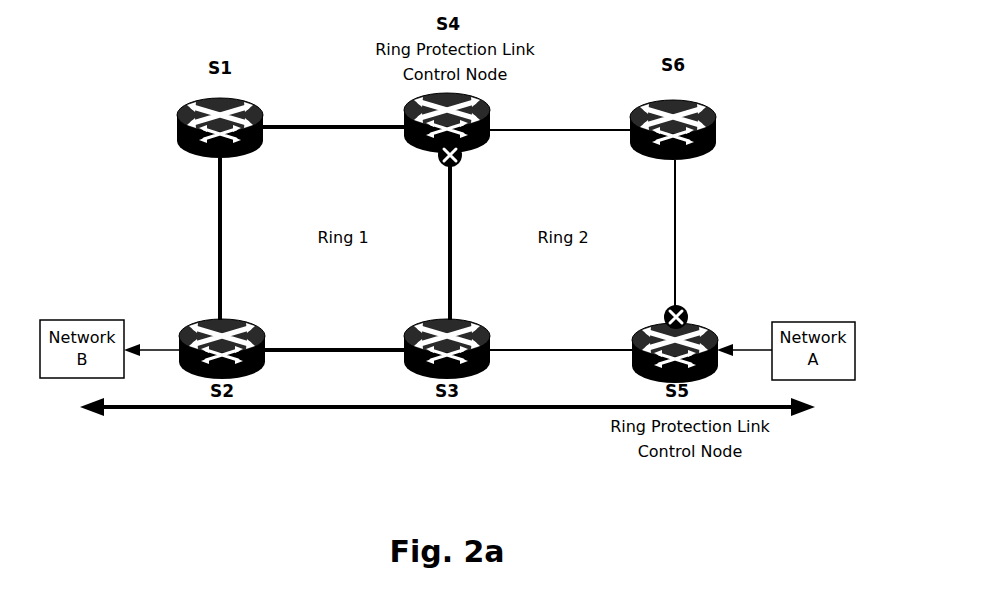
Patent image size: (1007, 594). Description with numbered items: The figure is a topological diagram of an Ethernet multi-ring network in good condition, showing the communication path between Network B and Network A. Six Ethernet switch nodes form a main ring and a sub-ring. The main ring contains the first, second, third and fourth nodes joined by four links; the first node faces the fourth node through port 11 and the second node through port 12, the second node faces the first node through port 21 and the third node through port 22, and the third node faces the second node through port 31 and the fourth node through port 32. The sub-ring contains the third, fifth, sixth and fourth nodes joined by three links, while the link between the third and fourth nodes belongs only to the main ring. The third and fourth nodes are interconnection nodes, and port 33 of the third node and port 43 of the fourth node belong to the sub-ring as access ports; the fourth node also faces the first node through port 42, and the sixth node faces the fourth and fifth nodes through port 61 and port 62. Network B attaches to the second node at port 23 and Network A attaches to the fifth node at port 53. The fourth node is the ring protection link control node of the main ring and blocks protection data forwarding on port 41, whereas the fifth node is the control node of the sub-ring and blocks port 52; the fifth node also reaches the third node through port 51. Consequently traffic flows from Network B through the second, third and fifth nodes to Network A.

The port 11 is at (299, 111).
The port 12 is at (202, 199).
The port 21 is at (201, 280).
The port 22 is at (300, 365).
The port 23 is at (152, 362).
The port 31 is at (370, 365).
The port 32 is at (433, 280).
The access port 33 is at (525, 365).
The port 41 is at (439, 191).
The port 42 is at (369, 111).
The access port 43 is at (525, 113).
The port 51 is at (596, 365).
The port 52 is at (688, 284).
The port 53 is at (744, 362).
The port 61 is at (596, 113).
The port 62 is at (692, 200).